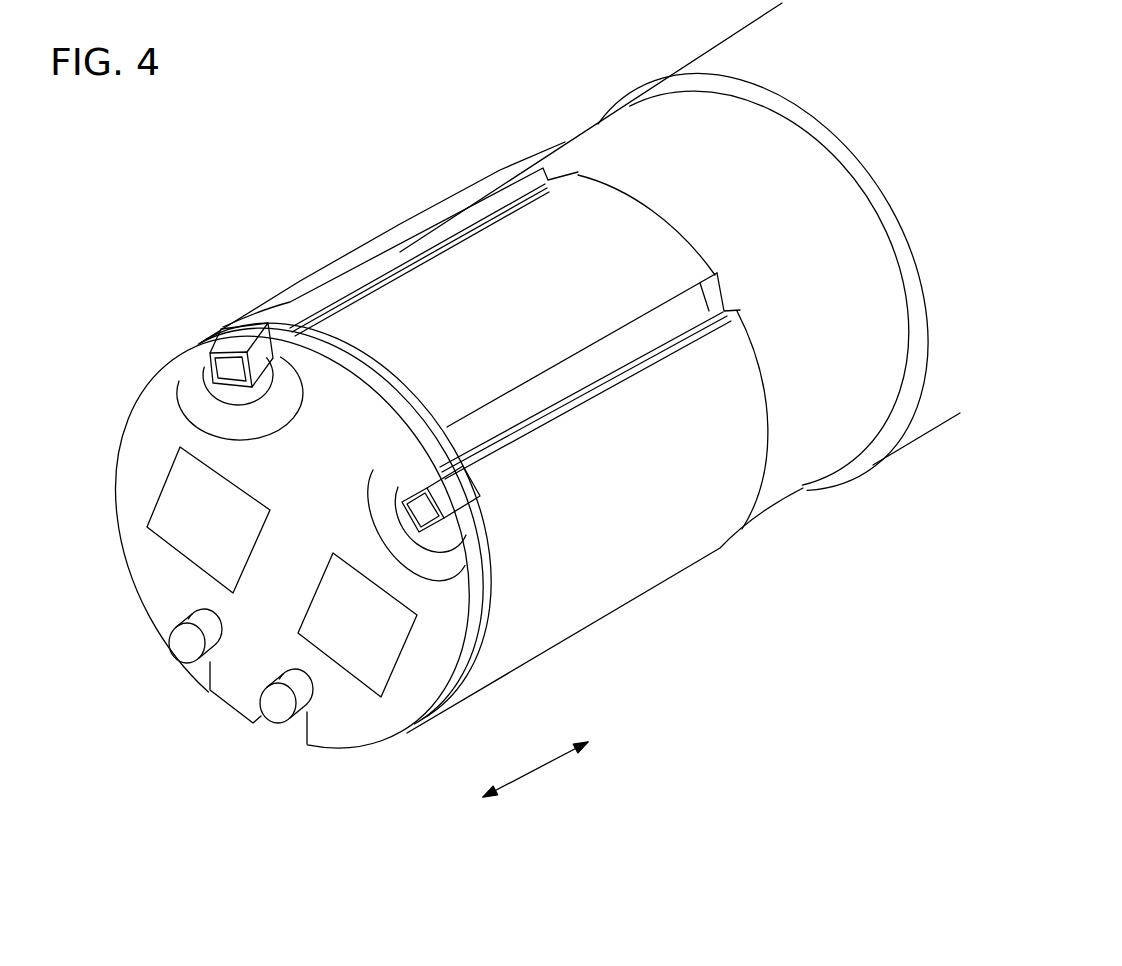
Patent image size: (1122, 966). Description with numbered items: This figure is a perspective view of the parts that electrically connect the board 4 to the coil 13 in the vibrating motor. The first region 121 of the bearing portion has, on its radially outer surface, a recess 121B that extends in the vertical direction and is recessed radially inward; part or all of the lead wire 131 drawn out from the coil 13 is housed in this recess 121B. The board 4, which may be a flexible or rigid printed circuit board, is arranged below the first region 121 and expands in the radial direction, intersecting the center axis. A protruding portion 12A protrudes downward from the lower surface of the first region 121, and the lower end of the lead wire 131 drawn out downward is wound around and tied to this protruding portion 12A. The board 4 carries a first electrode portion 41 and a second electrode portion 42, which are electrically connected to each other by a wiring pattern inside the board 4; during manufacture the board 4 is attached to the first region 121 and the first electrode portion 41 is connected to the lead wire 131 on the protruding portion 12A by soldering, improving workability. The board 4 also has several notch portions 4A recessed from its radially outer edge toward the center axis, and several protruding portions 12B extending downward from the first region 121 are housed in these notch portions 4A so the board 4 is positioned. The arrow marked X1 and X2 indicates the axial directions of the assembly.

The board 4 is at (130, 463).
The notch portion 4A is at (208, 682).
The first electrode portion 41 is at (190, 377).
The second electrode portion 42 is at (150, 520).
The protruding portion 12A is at (203, 347).
The protruding portion 12B is at (187, 647).
The first region 121 is at (600, 580).
The recess 121B is at (341, 289).
The lead wire 131 is at (463, 214).
The coil 13 is at (600, 147).
The axial direction X1 is at (553, 760).
The axial direction X2 is at (473, 806).